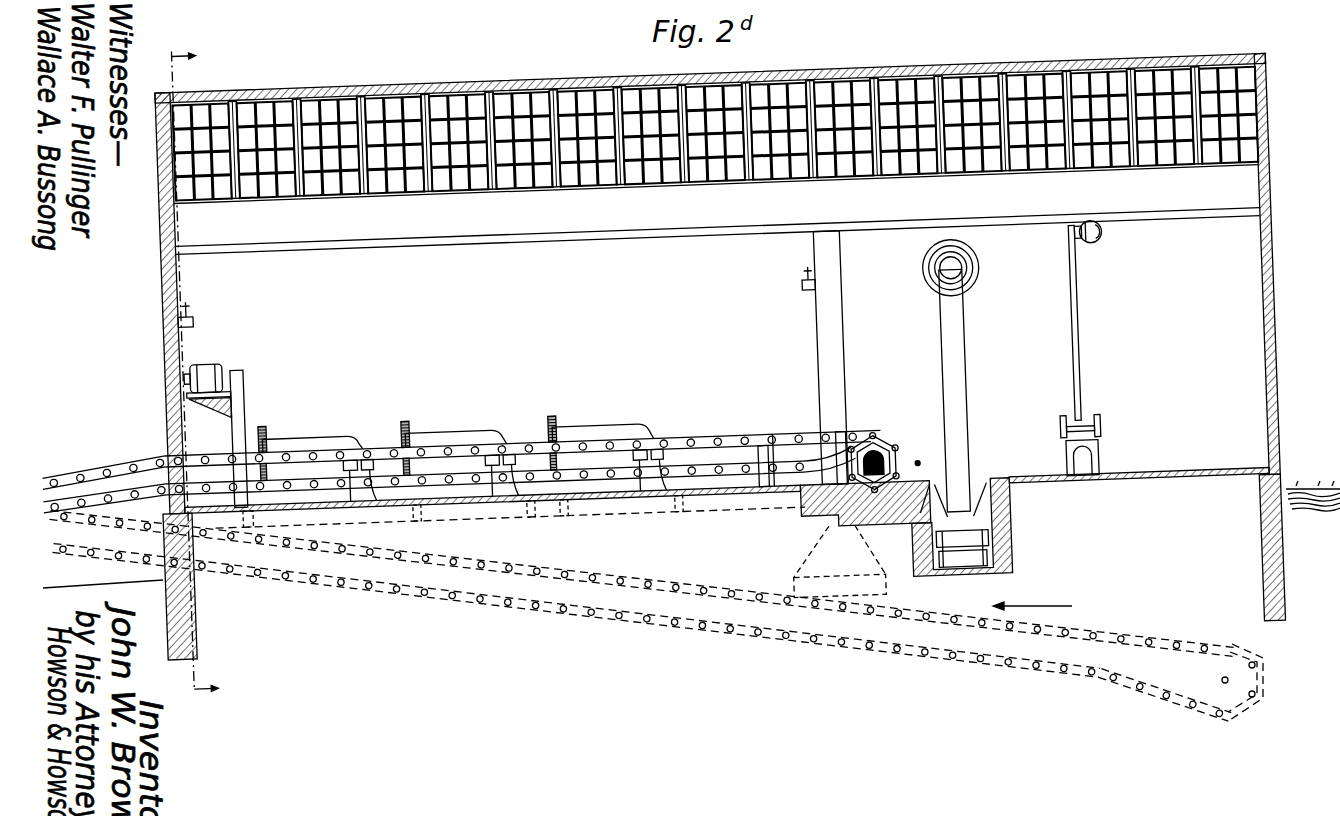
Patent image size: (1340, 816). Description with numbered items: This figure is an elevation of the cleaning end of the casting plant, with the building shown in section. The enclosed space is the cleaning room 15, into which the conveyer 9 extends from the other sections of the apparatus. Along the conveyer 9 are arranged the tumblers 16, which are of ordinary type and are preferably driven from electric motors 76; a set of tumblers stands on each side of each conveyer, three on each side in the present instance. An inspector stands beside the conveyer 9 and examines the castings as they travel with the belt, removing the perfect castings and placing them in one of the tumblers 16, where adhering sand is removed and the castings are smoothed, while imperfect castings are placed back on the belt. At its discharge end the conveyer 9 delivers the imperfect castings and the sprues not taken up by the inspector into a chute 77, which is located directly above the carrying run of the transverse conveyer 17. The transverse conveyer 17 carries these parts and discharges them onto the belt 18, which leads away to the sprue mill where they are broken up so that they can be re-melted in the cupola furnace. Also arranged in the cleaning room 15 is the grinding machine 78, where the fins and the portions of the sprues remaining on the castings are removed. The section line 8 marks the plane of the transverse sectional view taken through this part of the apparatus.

The section line 8— 8 is at (201, 373).
The conveyer 9 is at (470, 474).
The cleaning room 15 is at (717, 356).
The tumblers 16 is at (462, 456).
The transverse conveyer 17 is at (906, 529).
The belt 18 is at (656, 616).
The electric motor 76 is at (215, 425).
The chute 77 is at (906, 488).
The grinding machine 78 is at (1089, 348).